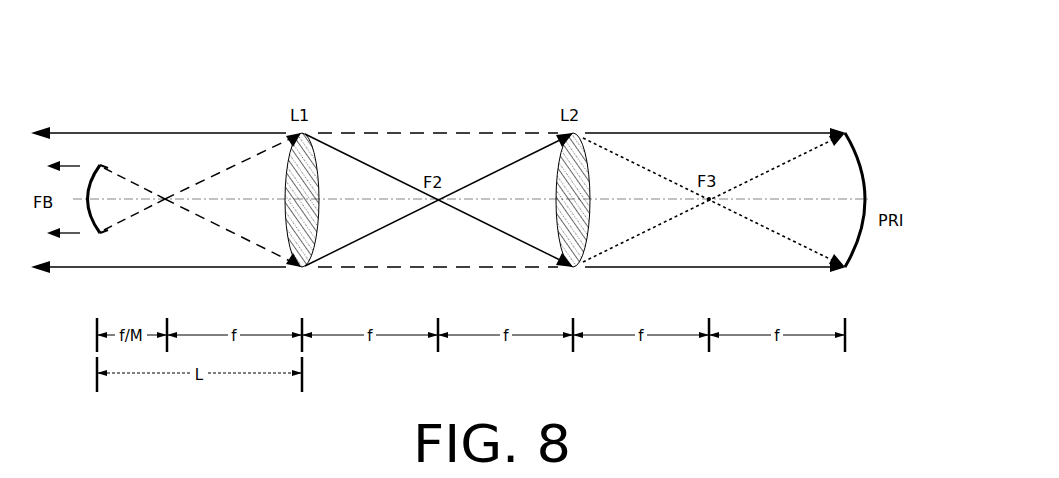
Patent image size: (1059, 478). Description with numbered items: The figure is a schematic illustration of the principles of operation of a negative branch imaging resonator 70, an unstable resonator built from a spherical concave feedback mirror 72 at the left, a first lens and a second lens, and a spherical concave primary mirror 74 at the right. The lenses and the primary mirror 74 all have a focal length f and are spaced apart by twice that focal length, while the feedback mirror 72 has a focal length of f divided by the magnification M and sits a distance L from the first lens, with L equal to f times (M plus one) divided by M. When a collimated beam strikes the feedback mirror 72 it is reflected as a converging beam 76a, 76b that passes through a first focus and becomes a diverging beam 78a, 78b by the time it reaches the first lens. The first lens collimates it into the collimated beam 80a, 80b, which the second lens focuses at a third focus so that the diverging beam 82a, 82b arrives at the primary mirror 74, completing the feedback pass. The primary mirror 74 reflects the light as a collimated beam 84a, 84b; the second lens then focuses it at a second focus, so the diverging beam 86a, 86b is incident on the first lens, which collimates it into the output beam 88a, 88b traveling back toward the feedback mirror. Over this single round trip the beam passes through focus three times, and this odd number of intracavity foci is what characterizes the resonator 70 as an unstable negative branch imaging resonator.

The negative branch imaging resonator 70 is at (677, 82).
The spherical concave feedback mirror 72 is at (52, 162).
The spherical concave primary mirror 74 is at (850, 132).
The converging beam 76a is at (116, 173).
The converging beam 76b is at (116, 227).
The diverging beam 78a is at (207, 186).
The diverging beam 78b is at (207, 213).
The collimated beam 80a is at (430, 132).
The collimated beam 80b is at (408, 266).
The diverging beam 82a is at (771, 230).
The diverging beam 82b is at (771, 170).
The collimated beam 84a is at (672, 266).
The collimated beam 84b is at (664, 134).
The diverging beam 86a is at (363, 165).
The diverging beam 86b is at (383, 225).
The output beam 88a is at (63, 140).
The output beam 88b is at (64, 251).